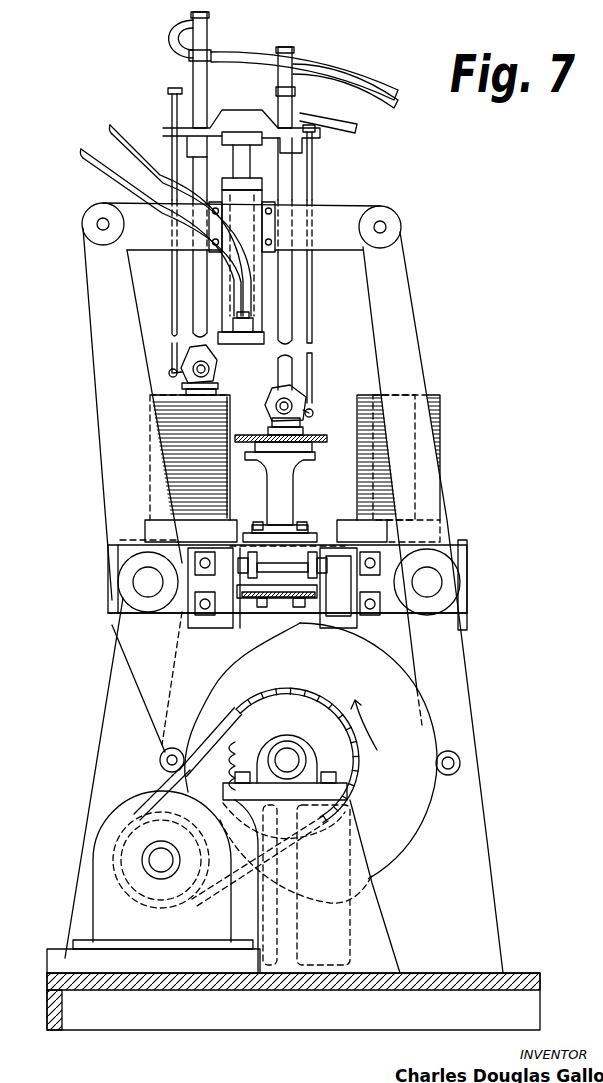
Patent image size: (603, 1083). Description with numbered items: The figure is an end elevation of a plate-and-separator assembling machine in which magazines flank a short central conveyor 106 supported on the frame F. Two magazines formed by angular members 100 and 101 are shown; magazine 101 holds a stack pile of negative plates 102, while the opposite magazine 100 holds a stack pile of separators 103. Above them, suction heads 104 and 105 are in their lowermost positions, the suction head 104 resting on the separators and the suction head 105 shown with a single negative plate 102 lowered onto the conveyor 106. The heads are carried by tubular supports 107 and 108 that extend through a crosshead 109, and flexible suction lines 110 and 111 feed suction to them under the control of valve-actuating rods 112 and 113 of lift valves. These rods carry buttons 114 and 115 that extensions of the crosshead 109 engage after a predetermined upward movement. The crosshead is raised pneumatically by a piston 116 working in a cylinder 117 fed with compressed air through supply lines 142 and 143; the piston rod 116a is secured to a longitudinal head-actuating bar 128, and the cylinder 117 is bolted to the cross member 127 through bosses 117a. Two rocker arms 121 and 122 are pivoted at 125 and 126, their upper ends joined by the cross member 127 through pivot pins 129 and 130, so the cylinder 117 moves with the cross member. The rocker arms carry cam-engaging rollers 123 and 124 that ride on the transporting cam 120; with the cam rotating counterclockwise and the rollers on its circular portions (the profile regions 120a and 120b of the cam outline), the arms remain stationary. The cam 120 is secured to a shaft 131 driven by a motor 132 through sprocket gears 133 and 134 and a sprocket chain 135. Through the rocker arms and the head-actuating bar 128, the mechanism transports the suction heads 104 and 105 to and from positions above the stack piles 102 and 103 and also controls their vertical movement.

The angular member 100 is at (230, 405).
The angular member 101 is at (357, 396).
The negative plate 102 is at (310, 438).
The separators 103 is at (157, 413).
The suction head 104 is at (212, 397).
The suction head 105 is at (302, 431).
The conveyor 106 is at (246, 443).
The tubular support 107 is at (200, 308).
The tubular support 108 is at (287, 297).
The crosshead 109 is at (230, 112).
The flexible suction line 110 is at (228, 54).
The flexible suction line 111 is at (337, 67).
The valve-actuating rod 112 is at (172, 118).
The valve-actuating rod 113 is at (311, 182).
The button 114 is at (168, 89).
The button 115 is at (307, 114).
The piston 116 is at (255, 325).
The piston rod 116a is at (247, 170).
The cylinder 117 is at (263, 268).
The boss 117a is at (278, 212).
The transporting cam 120 is at (407, 856).
The cam body upper edge 120a is at (293, 637).
The cam body lower edge 120b is at (308, 898).
The rocker arm 121 is at (110, 489).
The rocker arm 122 is at (418, 335).
The cam-engaging roller 123 is at (160, 762).
The cam-engaging roller 124 is at (460, 763).
The pivot 125 is at (143, 590).
The pivot 126 is at (434, 582).
The cross member 127 is at (358, 205).
The head-actuating bar 128 is at (233, 142).
The pivot pin 129 is at (100, 228).
The pivot pin 130 is at (386, 229).
The shaft 131 is at (287, 757).
The motor 132 is at (97, 865).
The sprocket gear 133 is at (172, 894).
The sprocket gear 134 is at (232, 757).
The sprocket chain 135 is at (307, 832).
The supply line 142 is at (148, 162).
The supply line 143 is at (115, 170).
The frame F is at (102, 990).